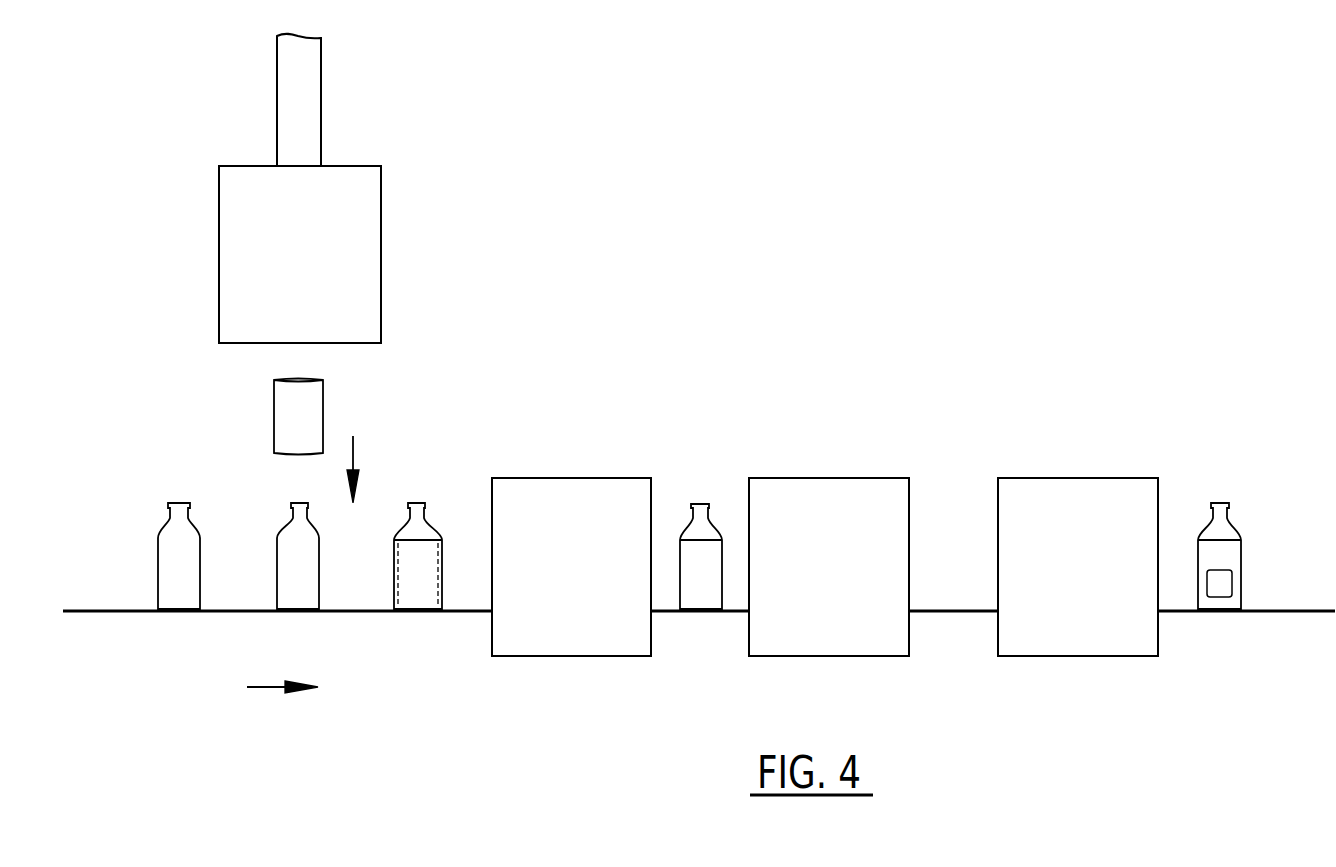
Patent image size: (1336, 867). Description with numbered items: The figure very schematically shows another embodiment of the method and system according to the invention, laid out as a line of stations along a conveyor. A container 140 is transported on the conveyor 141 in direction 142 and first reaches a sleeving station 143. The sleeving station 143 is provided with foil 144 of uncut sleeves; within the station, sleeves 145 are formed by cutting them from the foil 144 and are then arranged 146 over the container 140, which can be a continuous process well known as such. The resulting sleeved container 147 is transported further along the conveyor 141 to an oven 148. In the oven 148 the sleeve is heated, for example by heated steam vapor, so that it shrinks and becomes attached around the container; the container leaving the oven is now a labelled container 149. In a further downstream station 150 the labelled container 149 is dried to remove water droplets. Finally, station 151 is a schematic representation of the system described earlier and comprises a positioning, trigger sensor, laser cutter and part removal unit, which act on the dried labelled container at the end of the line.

The container 140 is at (166, 538).
The conveyor 141 is at (223, 610).
The direction 142 is at (281, 699).
The sleeving station 143 is at (300, 254).
The foil 144 is at (312, 86).
The sleeve 145 is at (298, 417).
The arranging of sleeve 146 is at (372, 469).
The sleeved container 147 is at (437, 506).
The oven 148 is at (571, 567).
The labelled container 149 is at (700, 470).
The downstream station 150 is at (829, 567).
The station 151 is at (1078, 567).